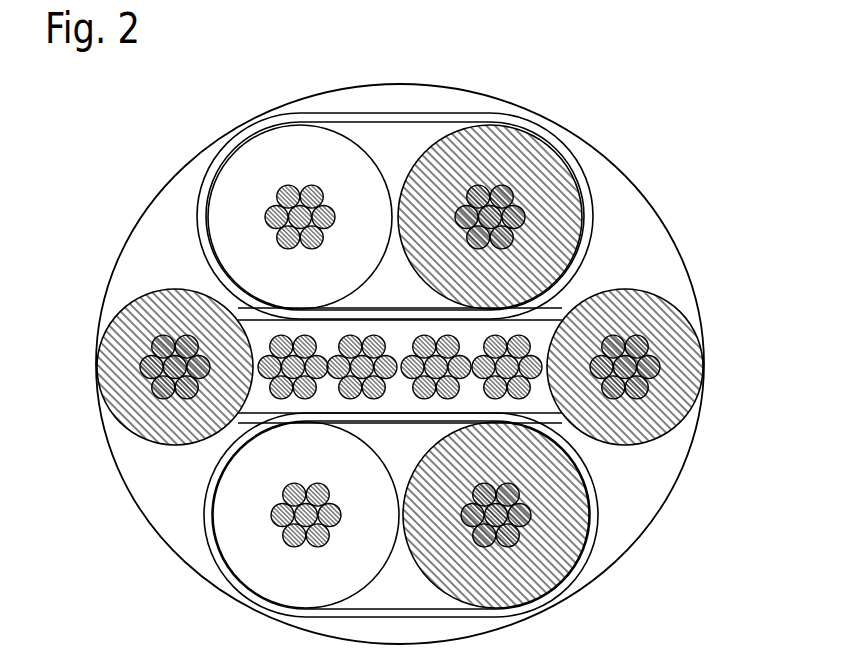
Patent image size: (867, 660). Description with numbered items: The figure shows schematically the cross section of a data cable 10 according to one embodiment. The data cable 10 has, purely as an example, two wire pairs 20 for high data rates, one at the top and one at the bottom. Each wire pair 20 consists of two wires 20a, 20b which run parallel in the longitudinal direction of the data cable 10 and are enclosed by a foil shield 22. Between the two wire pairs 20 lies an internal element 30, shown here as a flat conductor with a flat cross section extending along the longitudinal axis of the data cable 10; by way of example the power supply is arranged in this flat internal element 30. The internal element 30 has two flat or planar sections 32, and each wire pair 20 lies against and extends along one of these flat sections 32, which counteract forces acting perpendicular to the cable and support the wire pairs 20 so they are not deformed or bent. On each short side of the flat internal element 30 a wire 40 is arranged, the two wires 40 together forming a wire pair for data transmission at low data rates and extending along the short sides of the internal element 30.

The data cable 10 is at (468, 92).
The wire pair 20 is at (399, 353).
The wire 20a is at (210, 226).
The wire 20b is at (590, 238).
The foil shield 22 is at (396, 118).
The internal element 30 is at (552, 408).
The flat section 32 is at (243, 307).
The wire 40 is at (97, 367).